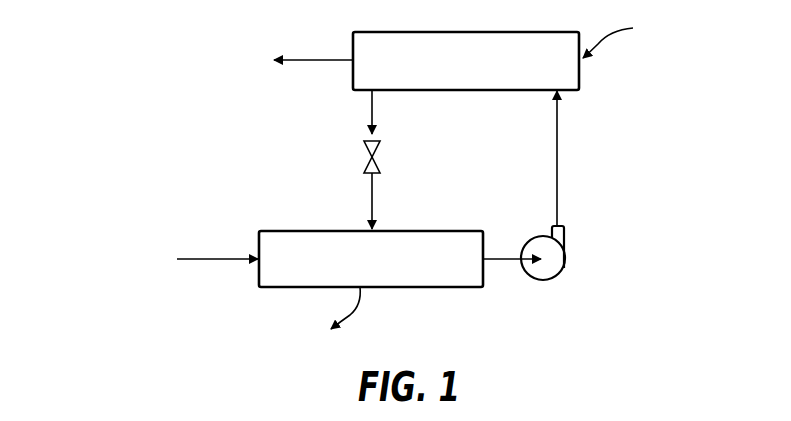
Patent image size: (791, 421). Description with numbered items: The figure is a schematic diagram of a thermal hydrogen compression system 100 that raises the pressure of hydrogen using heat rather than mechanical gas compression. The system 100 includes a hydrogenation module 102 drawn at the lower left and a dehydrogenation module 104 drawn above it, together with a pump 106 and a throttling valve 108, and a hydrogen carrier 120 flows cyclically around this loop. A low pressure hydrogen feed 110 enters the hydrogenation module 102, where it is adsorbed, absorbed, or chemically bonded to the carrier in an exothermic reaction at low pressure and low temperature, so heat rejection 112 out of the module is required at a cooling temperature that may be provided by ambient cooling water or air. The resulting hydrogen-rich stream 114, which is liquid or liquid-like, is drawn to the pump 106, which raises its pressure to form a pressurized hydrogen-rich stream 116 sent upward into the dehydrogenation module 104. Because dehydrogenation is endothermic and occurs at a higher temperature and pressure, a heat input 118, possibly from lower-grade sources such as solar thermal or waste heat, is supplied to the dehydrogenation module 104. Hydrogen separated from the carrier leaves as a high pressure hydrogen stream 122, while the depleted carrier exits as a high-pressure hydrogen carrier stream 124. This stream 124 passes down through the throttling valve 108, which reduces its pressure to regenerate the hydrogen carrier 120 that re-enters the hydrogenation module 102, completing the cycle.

The thermal hydrogen compression system 100 is at (128, 63).
The hydrogenation module 102 is at (298, 231).
The dehydrogenation module 104 is at (525, 32).
The pump 106 is at (560, 278).
The throttling valve 108 is at (378, 162).
The low pressure hydrogen feed 110 is at (205, 262).
The heat rejection 112 is at (352, 320).
The hydrogen-rich stream 114 is at (505, 257).
The pressurized hydrogen-rich stream 116 is at (560, 154).
The heat input 118 is at (610, 50).
The hydrogen carrier 120 is at (370, 192).
The high pressure hydrogen stream 122 is at (313, 58).
The high-pressure hydrogen carrier stream 124 is at (370, 107).